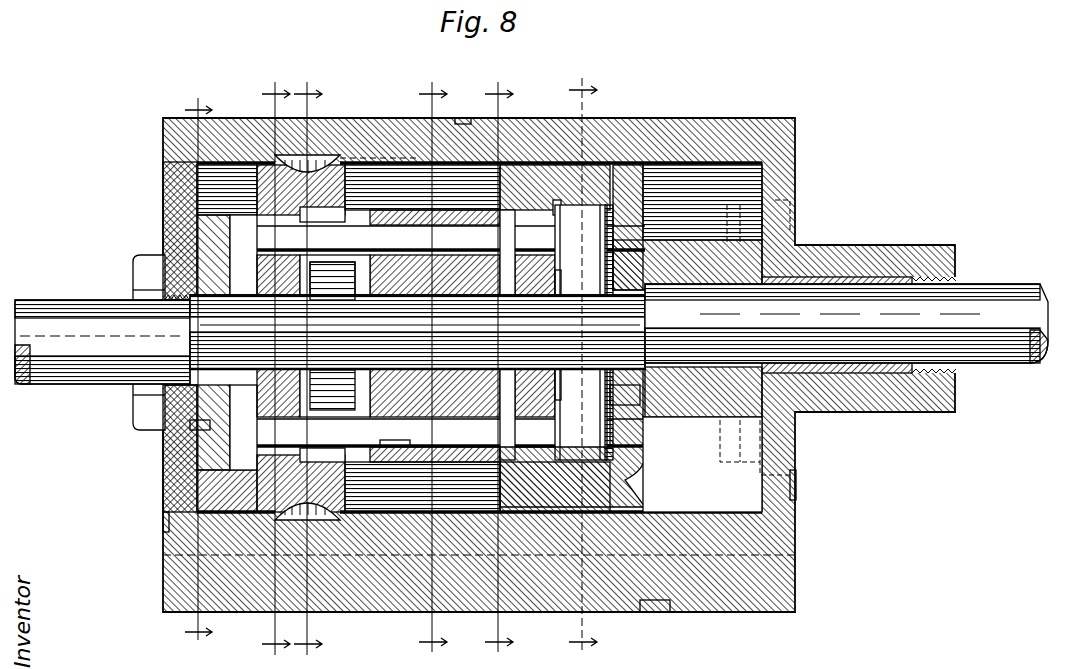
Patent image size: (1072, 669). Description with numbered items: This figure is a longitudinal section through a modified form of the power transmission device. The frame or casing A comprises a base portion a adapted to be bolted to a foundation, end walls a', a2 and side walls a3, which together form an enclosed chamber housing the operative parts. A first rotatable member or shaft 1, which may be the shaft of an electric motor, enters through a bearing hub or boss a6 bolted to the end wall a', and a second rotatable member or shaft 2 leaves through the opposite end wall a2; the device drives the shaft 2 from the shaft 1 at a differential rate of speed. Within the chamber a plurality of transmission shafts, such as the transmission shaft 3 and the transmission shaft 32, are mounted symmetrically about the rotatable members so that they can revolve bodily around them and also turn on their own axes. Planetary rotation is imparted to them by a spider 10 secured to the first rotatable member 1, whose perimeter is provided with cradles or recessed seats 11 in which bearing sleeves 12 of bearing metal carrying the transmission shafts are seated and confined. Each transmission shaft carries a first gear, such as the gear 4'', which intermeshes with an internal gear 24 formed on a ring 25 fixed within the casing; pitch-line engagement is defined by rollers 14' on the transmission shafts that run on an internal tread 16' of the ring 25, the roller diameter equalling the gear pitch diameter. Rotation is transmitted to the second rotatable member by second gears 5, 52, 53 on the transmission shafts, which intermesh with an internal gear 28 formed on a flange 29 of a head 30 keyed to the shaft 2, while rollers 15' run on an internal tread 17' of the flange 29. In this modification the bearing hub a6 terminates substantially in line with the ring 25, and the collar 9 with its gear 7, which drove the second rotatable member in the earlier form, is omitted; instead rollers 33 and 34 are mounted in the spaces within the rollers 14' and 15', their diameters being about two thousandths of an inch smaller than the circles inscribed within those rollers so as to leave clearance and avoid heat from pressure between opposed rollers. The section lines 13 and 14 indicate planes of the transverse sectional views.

The frame A is at (804, 129).
The base portion a is at (655, 612).
The end wall a' is at (144, 522).
The end wall a2 is at (796, 484).
The side walls a3 is at (463, 118).
The bearing hub a6 is at (200, 428).
The shaft 1 is at (82, 312).
The shaft 2 is at (985, 292).
The transmission shaft 3 is at (362, 228).
The gear 4'' is at (417, 369).
The gear 5 is at (560, 270).
The gear 7 is at (332, 264).
The collar 9 is at (198, 375).
The spider 10 is at (276, 368).
The cradles 11 is at (308, 368).
The bearing sleeves 12 is at (446, 367).
The section line 13 is at (499, 367).
The section line 14 is at (583, 362).
The rollers 14' is at (176, 343).
The rollers 15' is at (591, 299).
The internal tread 16' is at (181, 338).
The internal tread 17' is at (687, 301).
The internal gear 24 is at (345, 225).
The ring 25 is at (200, 170).
The internal gear 28 is at (520, 195).
The flange 29 is at (585, 205).
The head 30 is at (720, 252).
The transmission shaft 32 is at (395, 435).
The roller 33 is at (200, 455).
The roller 34 is at (612, 390).
The gear 52 is at (560, 395).
The gear 53 is at (540, 330).